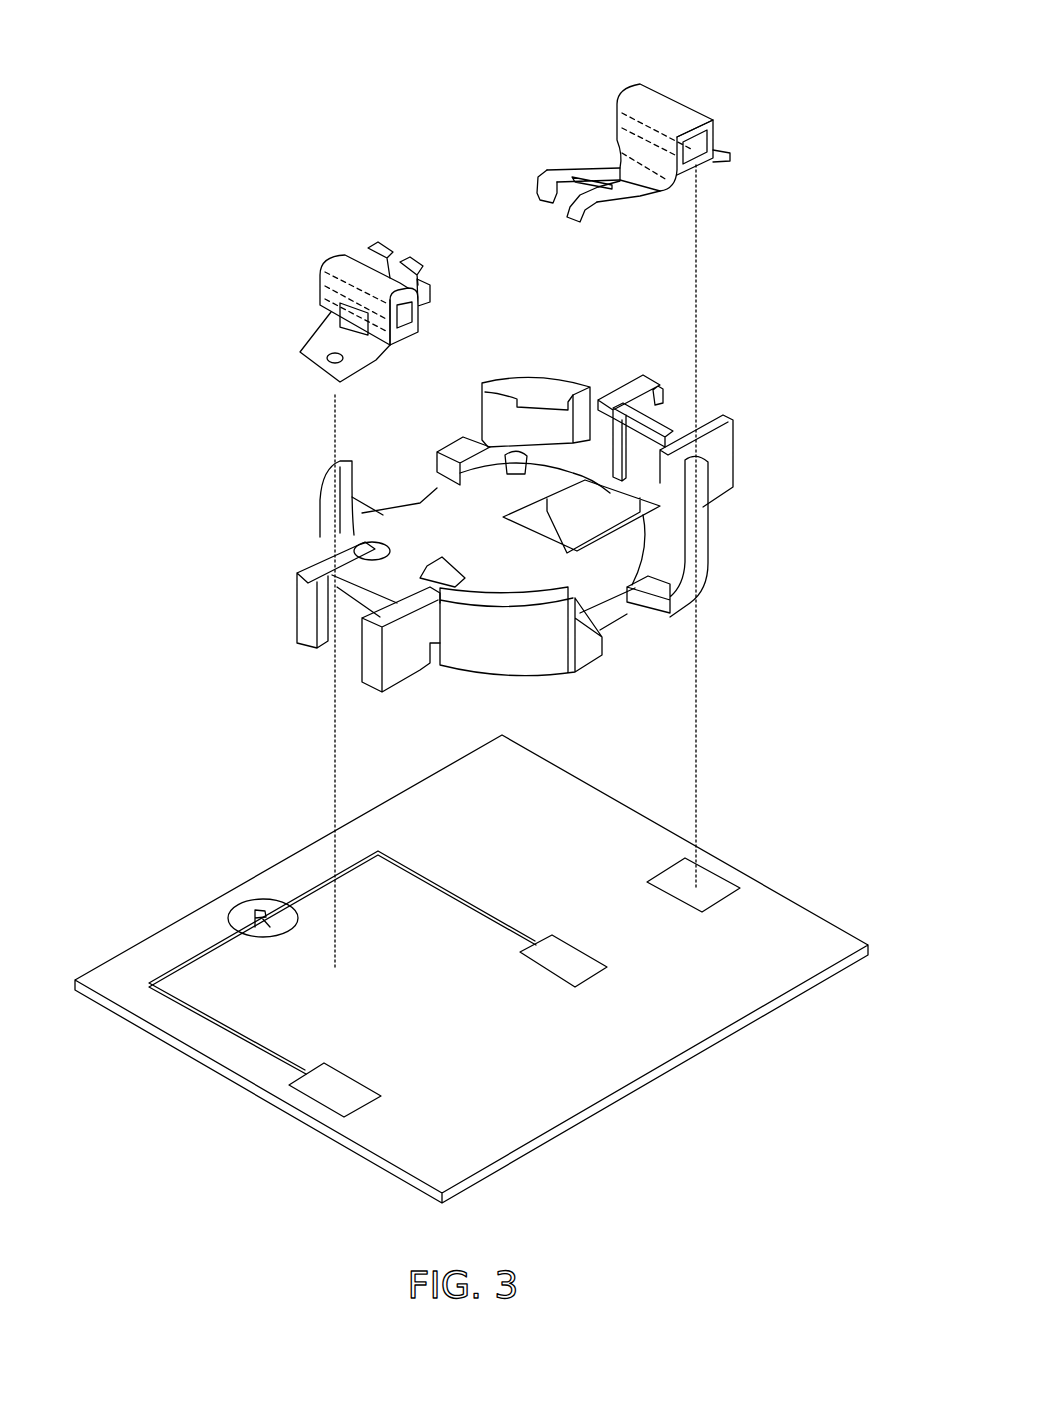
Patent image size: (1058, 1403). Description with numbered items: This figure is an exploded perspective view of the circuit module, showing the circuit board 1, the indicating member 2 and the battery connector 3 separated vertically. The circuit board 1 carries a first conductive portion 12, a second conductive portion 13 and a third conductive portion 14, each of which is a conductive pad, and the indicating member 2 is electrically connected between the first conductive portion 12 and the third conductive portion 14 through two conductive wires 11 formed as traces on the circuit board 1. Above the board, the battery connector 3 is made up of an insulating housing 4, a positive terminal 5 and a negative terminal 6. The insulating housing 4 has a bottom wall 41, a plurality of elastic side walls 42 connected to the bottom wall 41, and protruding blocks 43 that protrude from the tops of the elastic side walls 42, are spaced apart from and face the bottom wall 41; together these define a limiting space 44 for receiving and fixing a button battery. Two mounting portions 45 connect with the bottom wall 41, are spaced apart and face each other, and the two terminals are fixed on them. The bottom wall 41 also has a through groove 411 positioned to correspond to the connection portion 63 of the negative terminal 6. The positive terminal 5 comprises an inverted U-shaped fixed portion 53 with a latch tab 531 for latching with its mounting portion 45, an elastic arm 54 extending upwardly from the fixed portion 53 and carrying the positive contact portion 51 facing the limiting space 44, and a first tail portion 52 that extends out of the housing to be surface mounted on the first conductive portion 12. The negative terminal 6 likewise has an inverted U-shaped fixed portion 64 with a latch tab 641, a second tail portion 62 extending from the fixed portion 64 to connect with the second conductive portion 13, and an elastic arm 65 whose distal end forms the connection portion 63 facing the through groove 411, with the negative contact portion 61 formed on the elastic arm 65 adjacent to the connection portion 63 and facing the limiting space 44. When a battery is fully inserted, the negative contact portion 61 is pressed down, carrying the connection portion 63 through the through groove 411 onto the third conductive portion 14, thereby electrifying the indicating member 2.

The circuit board 1 is at (772, 893).
The conductive wire 11 is at (316, 886).
The first conductive portion 12 is at (350, 1089).
The second conductive portion 13 is at (677, 883).
The third conductive portion 14 is at (552, 960).
The indicating member 2 is at (244, 903).
The battery connector 3 is at (763, 268).
The insulating housing 4 is at (298, 490).
The bottom wall 41 is at (678, 603).
The through groove 411 is at (570, 537).
The elastic side wall 42 is at (510, 387).
The protruding block 43 is at (543, 402).
The limiting space 44 is at (450, 517).
The mounting portion 45 is at (670, 423).
The positive terminal 5 is at (316, 250).
The positive contact portion 51 is at (427, 270).
The first tail portion 52 is at (302, 352).
The fixed portion 53 is at (347, 285).
The latch tab 531 is at (341, 310).
The elastic arm 54 is at (431, 295).
The negative terminal 6 is at (605, 92).
The negative contact portion 61 is at (600, 168).
The second tail portion 62 is at (718, 153).
The connection portion 63 is at (578, 222).
The fixed portion 64 is at (662, 107).
The latch tab 641 is at (687, 163).
The elastic arm 65 is at (620, 190).